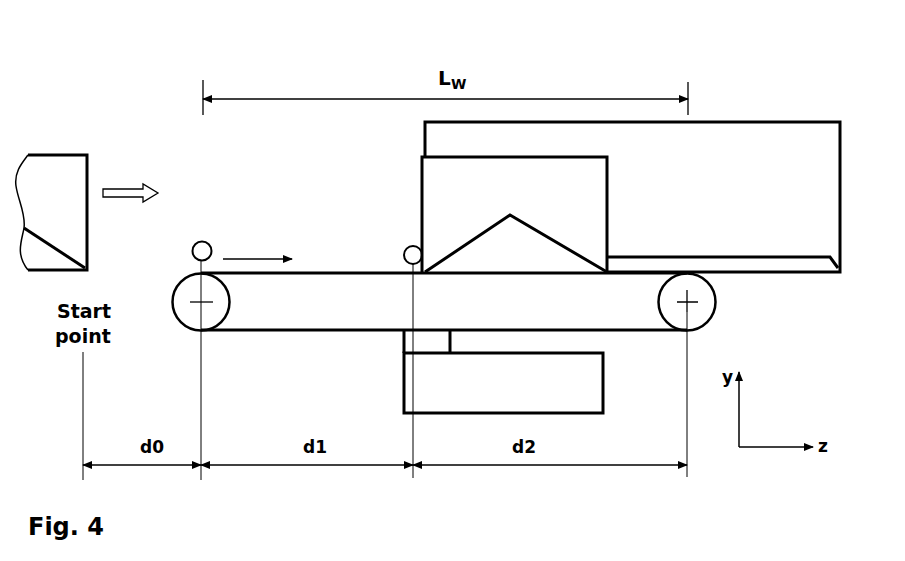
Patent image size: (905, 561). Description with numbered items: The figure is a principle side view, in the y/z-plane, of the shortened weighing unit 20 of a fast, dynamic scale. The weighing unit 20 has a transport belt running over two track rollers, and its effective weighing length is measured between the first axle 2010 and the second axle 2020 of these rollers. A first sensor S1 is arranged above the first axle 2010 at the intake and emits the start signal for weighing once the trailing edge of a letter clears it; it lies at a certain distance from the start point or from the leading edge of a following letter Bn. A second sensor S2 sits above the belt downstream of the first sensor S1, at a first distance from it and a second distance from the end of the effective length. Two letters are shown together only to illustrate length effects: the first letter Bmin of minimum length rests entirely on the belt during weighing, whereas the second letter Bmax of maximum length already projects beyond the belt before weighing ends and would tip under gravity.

The shortened weighing unit 20 is at (160, 125).
The first axle 2010 is at (203, 302).
The second axle 2020 is at (690, 303).
The first sensor S1 is at (193, 239).
The second sensor S2 is at (404, 244).
The following letter Bn is at (58, 197).
The first letter with minimum letter length Bmin is at (433, 206).
The second letter with maximum letter length Bmax is at (793, 157).